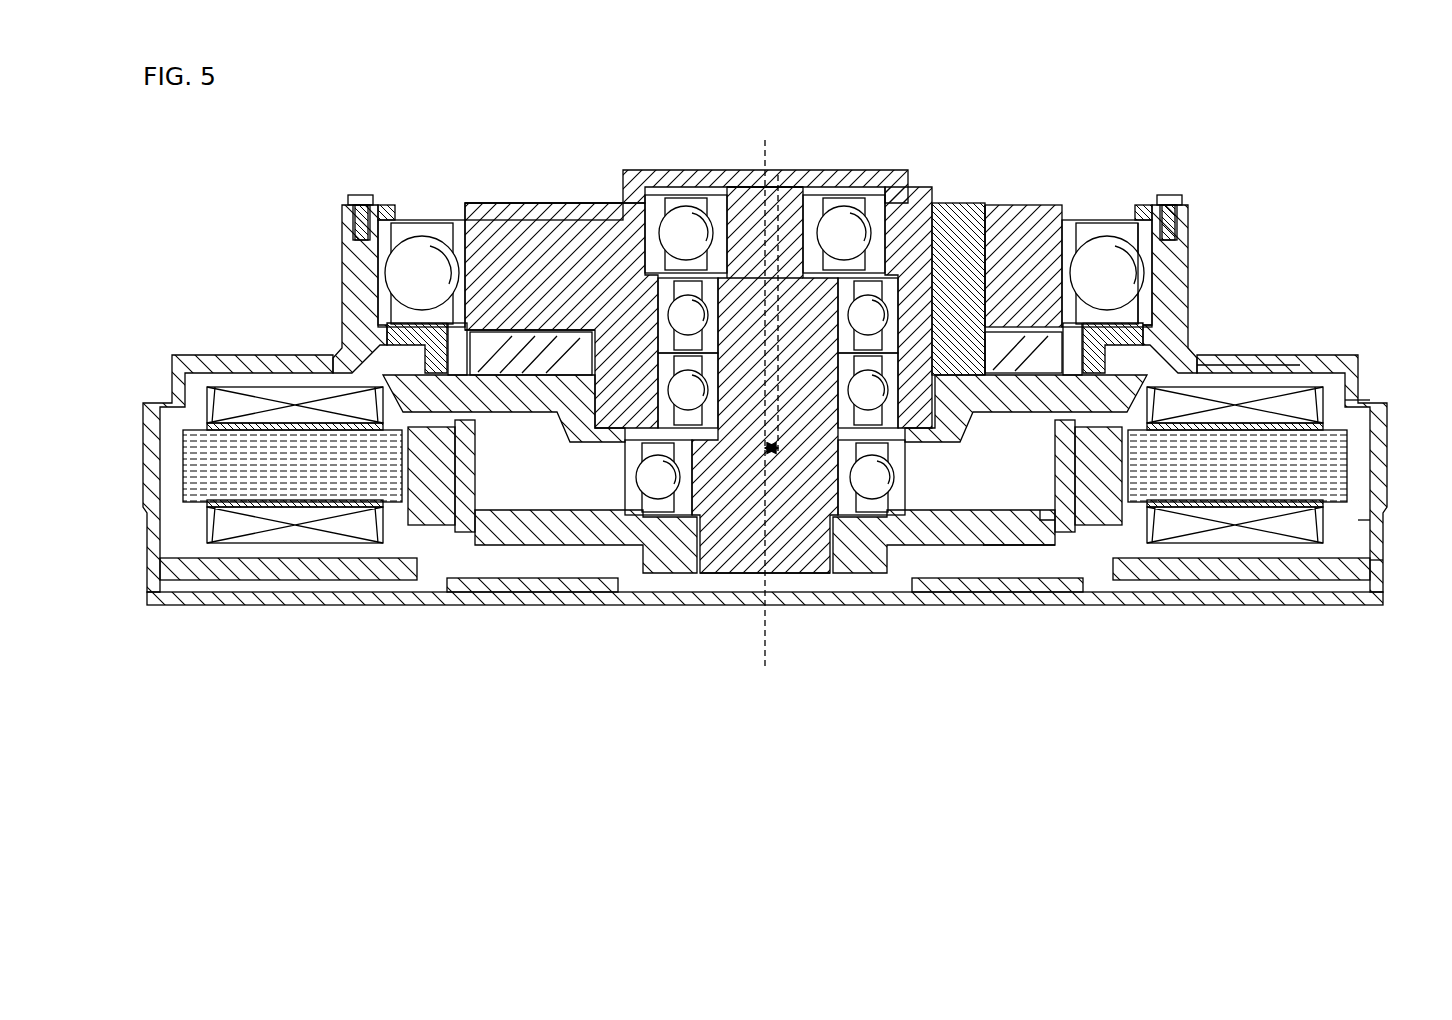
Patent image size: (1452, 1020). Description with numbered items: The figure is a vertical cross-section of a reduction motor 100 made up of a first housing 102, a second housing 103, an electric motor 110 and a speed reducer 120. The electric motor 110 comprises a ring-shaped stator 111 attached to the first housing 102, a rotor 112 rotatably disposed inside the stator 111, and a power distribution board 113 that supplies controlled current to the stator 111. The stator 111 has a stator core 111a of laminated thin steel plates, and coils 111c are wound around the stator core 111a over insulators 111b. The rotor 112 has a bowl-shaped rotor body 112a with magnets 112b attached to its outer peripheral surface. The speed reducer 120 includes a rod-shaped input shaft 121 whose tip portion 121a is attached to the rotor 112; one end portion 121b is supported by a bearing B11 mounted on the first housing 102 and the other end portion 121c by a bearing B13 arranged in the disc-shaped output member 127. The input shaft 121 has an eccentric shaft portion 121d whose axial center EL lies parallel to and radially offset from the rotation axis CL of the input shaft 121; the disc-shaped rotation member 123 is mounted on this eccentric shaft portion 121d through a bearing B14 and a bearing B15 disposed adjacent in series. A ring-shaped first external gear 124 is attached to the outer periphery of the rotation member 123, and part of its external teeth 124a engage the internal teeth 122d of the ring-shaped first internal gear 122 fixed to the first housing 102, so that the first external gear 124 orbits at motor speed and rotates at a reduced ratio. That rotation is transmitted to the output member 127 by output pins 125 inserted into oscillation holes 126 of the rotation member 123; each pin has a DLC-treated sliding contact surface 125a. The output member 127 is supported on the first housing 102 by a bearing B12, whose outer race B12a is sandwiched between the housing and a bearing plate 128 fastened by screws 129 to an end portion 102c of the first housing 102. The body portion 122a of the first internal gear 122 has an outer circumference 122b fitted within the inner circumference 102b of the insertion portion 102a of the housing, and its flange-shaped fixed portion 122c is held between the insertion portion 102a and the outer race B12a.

The reduction motor 100 is at (1108, 97).
The first housing 102 is at (1197, 276).
The insertion portion 102a is at (1145, 338).
The inner circumference 102b is at (1155, 328).
The end portion 102c is at (355, 230).
The second housing 103 is at (1005, 605).
The electric motor 110 is at (1085, 565).
The stator 111 is at (1343, 392).
The stator core 111a is at (1376, 588).
The insulators 111b is at (1237, 392).
The coils 111c is at (1247, 378).
The rotor 112 is at (1028, 492).
The rotor body 112a is at (1001, 511).
The magnets 112b is at (1052, 508).
The power distribution board 113 is at (1260, 582).
The speed reducer 120 is at (498, 186).
The input shaft 121 is at (733, 583).
The tip portion 121a is at (772, 580).
The one end portion 121b is at (810, 578).
The other end portion 121c is at (768, 228).
The eccentric shaft portion 121d is at (805, 240).
The first internal gear 122 is at (440, 356).
The body portion 122a is at (1095, 375).
The outer circumference 122b is at (765, 466).
The fixed portion 122c is at (385, 332).
The internal teeth 122d is at (490, 326).
The rotation member 123 is at (600, 395).
The first external gear 124 is at (510, 378).
The external teeth 124a is at (510, 350).
The output pins 125 is at (958, 240).
The sliding contact surface 125a is at (1000, 330).
The oscillation holes 126 is at (1052, 302).
The output member 127 is at (553, 272).
The bearing plate 128 is at (340, 212).
The screws 129 is at (362, 195).
The bearing B11 is at (668, 480).
The bearing B12 is at (1107, 258).
The outer race B12a is at (1140, 258).
The bearing B13 is at (850, 232).
The bearing B14 is at (863, 394).
The bearing B15 is at (863, 320).
The rotation axis CL is at (770, 668).
The axial center of the eccentric shaft portion EL is at (779, 440).